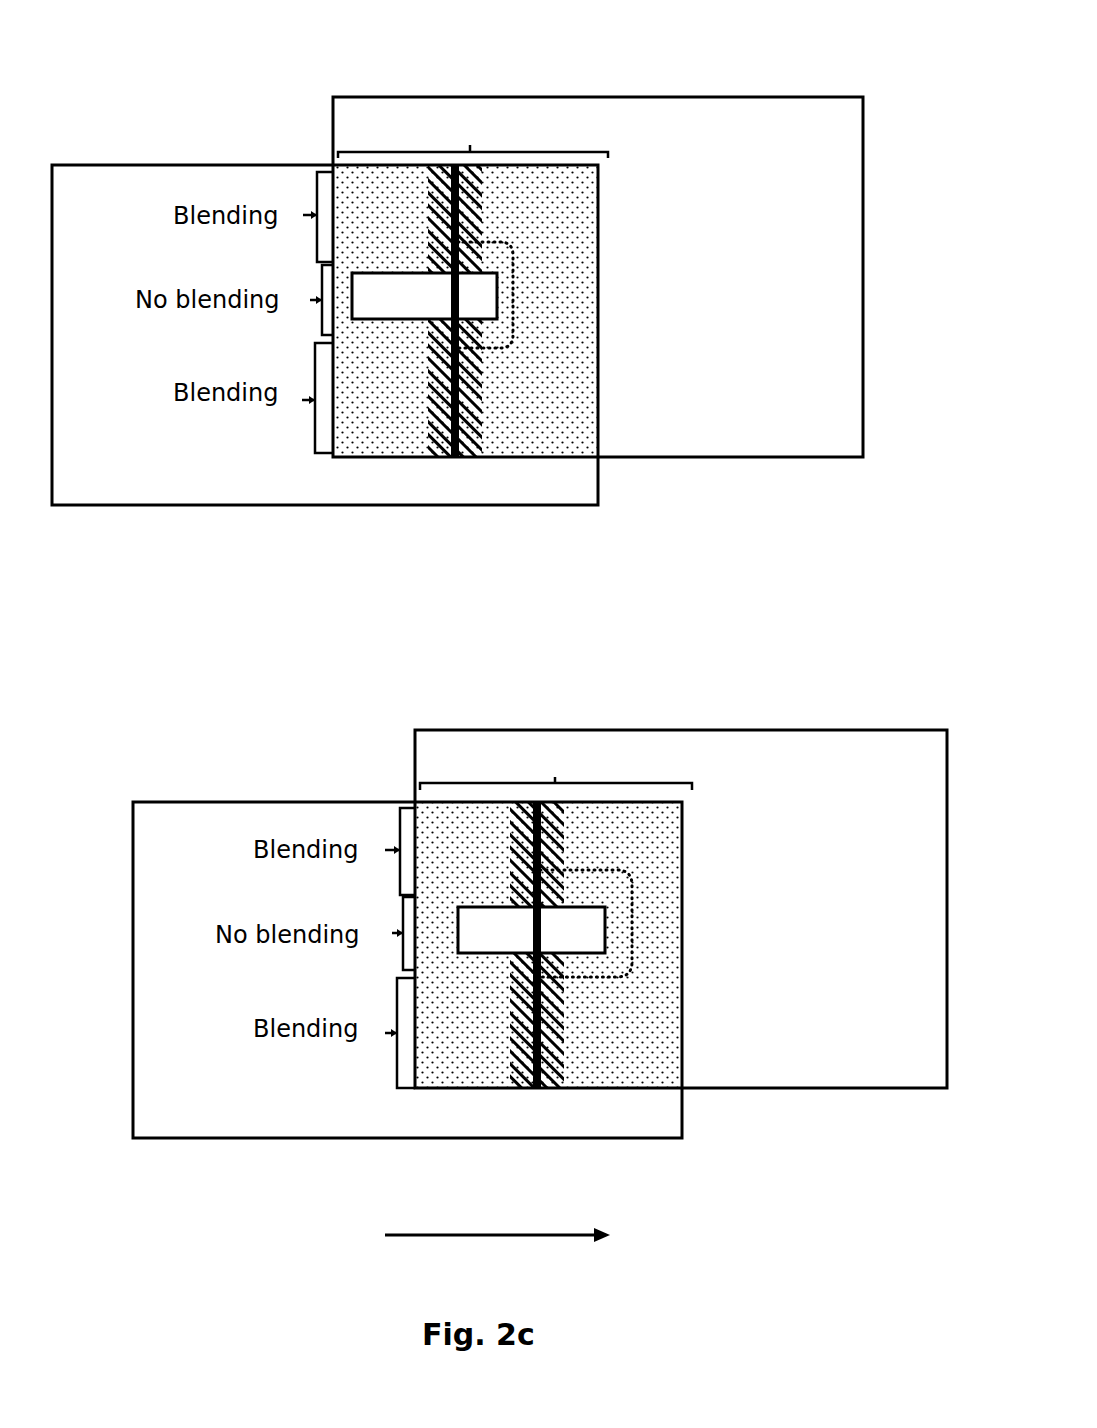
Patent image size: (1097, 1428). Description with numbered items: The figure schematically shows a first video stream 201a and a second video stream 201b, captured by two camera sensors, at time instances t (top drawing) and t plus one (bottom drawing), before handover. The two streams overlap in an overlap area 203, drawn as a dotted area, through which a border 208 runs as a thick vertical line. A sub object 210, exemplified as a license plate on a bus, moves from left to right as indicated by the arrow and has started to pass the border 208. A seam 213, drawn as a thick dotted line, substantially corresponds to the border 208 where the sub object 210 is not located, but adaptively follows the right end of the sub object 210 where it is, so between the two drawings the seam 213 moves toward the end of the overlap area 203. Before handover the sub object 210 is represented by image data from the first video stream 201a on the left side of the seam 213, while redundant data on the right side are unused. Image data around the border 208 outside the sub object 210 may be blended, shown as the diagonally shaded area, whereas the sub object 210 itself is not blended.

The first video stream 201a is at (85, 165).
The second video stream 201b is at (728, 97).
The overlap area 203 is at (515, 449).
The border 208 is at (443, 382).
The sub object 210 is at (483, 283).
The seam 213 is at (513, 345).